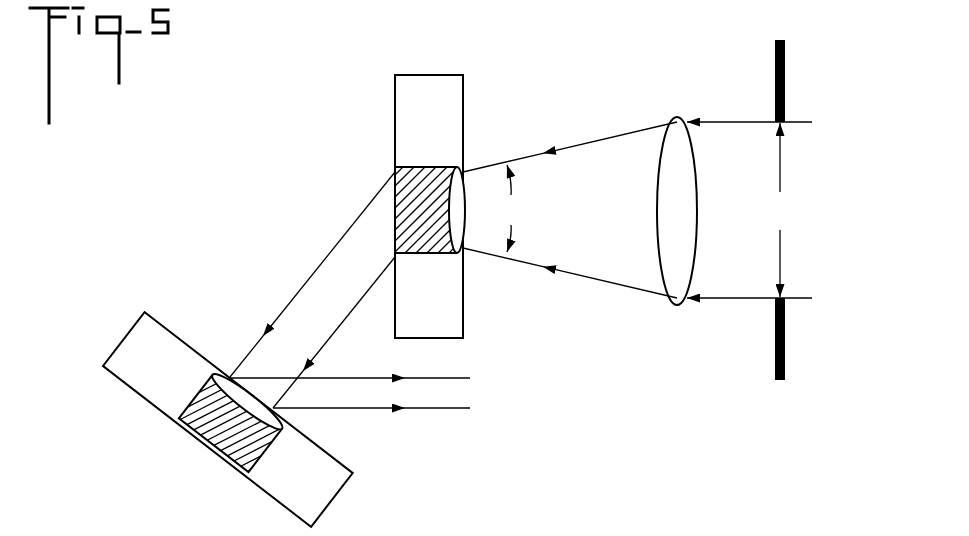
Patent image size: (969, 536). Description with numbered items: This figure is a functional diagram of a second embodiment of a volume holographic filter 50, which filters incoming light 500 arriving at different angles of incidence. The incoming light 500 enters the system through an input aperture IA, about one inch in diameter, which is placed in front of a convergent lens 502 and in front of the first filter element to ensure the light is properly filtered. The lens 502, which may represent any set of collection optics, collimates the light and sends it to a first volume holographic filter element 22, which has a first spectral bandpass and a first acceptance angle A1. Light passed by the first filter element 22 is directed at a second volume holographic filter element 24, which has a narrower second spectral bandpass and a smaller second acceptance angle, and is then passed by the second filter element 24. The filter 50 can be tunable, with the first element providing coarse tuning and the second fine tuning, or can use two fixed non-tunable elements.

The volume holographic filter 50 is at (250, 90).
The first volume holographic filter element 22 is at (393, 152).
The second volume holographic filter element 24 is at (257, 487).
The incoming light 500 is at (577, 173).
The convergent lens 502 is at (678, 260).
The first acceptance angle A1 is at (518, 208).
The input aperture IA is at (749, 210).